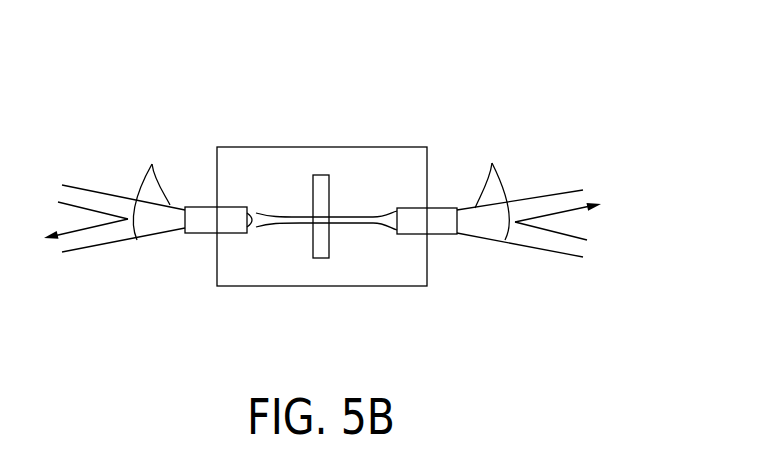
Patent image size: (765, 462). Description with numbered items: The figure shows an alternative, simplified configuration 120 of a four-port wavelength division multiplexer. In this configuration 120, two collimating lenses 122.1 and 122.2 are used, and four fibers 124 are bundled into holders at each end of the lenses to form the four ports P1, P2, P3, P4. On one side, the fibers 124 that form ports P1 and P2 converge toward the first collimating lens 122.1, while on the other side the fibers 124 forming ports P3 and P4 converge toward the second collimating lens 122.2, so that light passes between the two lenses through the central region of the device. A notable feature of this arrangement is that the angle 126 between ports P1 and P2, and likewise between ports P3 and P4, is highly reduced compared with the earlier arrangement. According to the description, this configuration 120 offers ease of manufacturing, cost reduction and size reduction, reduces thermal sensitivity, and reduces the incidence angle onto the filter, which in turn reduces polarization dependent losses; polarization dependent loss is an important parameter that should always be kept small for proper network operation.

The alternative configuration 120 is at (430, 96).
The collimating lens 122.1 is at (242, 206).
The collimating lens 122.2 is at (407, 207).
The fibers 124 is at (152, 164).
The angle 126 is at (265, 232).
The port P1 is at (87, 190).
The port P2 is at (87, 248).
The port P3 is at (558, 253).
The port P4 is at (558, 193).